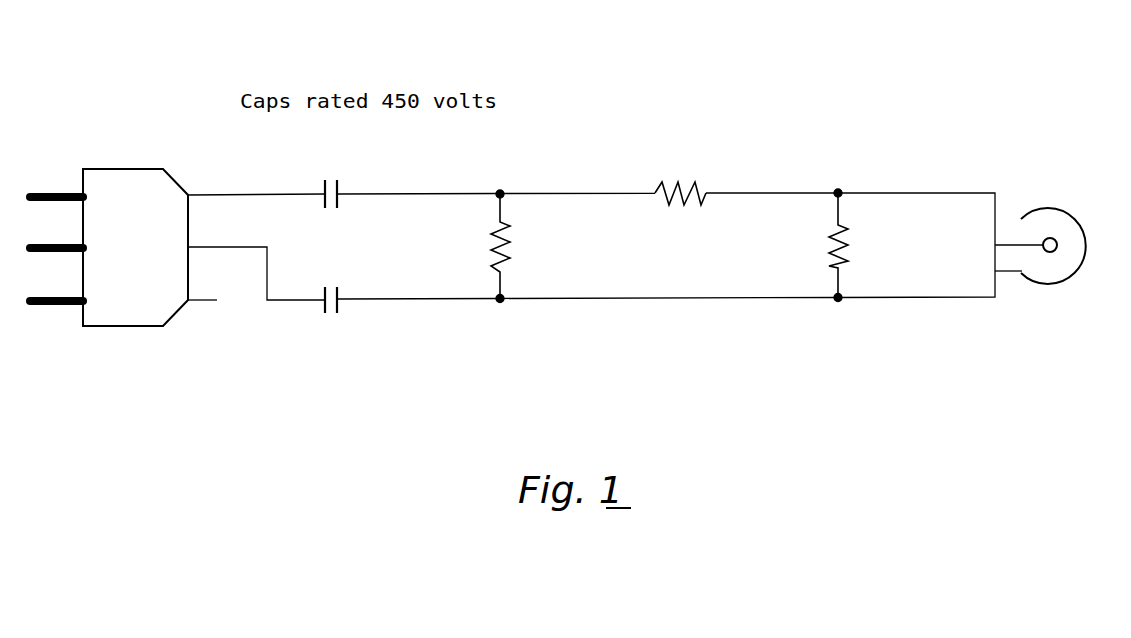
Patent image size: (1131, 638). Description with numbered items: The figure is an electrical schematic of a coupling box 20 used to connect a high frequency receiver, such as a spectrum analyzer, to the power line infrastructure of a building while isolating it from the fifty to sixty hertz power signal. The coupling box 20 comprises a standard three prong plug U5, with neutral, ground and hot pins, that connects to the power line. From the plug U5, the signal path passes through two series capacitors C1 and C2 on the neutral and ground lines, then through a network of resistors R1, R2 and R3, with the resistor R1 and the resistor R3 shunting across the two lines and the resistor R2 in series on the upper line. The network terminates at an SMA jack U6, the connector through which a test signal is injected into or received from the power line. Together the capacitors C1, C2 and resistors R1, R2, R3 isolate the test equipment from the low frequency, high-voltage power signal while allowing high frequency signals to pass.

The coupling box 20 is at (661, 61).
The three prong plug U5 is at (109, 259).
The SMA jack U6 is at (1071, 254).
The capacitor C1 is at (349, 188).
The capacitor C2 is at (349, 290).
The resistor R1 is at (541, 246).
The resistor R2 is at (680, 204).
The resistor R3 is at (880, 245).